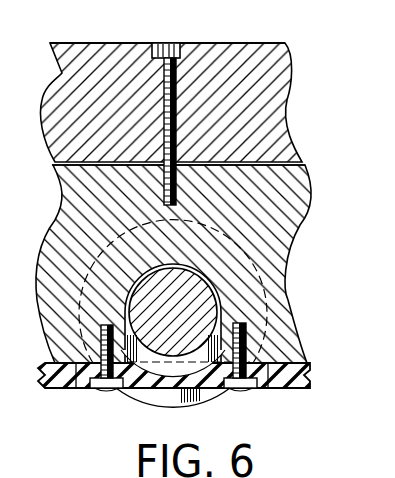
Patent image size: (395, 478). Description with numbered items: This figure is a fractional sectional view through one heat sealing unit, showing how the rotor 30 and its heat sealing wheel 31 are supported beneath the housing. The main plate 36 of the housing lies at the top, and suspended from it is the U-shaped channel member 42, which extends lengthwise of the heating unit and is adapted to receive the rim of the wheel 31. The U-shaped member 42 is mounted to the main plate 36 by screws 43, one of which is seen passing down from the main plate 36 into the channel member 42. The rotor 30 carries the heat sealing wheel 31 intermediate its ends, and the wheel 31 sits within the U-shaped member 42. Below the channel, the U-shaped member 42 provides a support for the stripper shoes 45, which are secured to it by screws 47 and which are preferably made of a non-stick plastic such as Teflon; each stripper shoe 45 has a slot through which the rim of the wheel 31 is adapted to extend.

The rotor 30 is at (232, 311).
The heat sealing wheel 31 is at (149, 390).
The main plate 36 is at (281, 82).
The U-shaped channel member 42 is at (292, 207).
The screw 43 is at (172, 43).
The stripper shoe 45 is at (190, 394).
The screw 47 is at (105, 389).